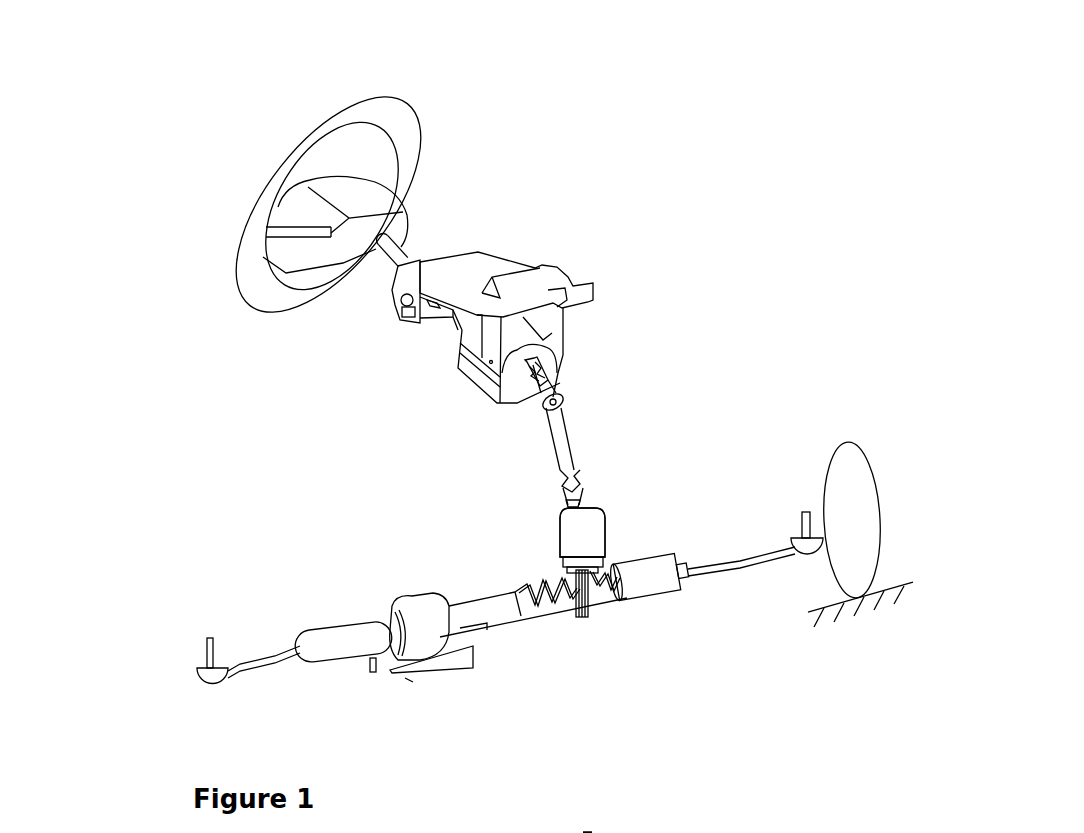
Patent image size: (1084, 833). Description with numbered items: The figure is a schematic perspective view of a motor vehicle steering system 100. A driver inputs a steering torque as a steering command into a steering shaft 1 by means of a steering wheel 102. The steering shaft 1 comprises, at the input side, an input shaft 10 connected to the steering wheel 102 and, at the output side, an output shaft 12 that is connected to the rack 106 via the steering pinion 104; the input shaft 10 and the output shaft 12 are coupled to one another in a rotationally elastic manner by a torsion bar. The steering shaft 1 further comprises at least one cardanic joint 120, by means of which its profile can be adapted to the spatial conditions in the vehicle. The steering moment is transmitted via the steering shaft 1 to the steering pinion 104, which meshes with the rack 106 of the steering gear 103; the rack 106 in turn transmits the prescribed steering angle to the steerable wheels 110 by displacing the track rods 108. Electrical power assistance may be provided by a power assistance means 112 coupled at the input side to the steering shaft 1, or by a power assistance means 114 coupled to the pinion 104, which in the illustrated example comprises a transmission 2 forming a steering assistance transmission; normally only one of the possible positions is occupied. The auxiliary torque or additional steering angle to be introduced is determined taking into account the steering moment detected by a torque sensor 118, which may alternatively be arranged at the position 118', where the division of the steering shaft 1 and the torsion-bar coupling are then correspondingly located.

The motor vehicle steering system 100 is at (722, 114).
The steering wheel 102 is at (412, 135).
The steering shaft 1 is at (403, 247).
The input shaft 10 is at (410, 262).
The power assistance means 112 is at (528, 335).
The output shaft 12 is at (500, 375).
The cardanic joint 120 is at (535, 368).
The torque sensor 118 is at (319, 328).
The torque sensor 118' is at (418, 505).
The transmission 2 is at (547, 538).
The power assistance means 114 is at (590, 540).
The steering pinion 104 is at (582, 618).
The rack 106 is at (523, 618).
The steering gear 103 is at (433, 612).
The track rod 108 is at (278, 670).
The wheel 110 is at (852, 462).